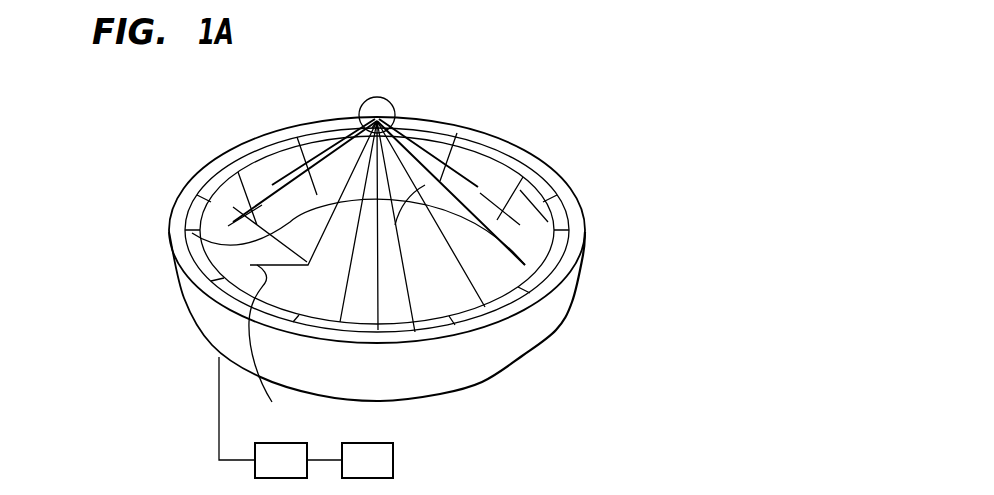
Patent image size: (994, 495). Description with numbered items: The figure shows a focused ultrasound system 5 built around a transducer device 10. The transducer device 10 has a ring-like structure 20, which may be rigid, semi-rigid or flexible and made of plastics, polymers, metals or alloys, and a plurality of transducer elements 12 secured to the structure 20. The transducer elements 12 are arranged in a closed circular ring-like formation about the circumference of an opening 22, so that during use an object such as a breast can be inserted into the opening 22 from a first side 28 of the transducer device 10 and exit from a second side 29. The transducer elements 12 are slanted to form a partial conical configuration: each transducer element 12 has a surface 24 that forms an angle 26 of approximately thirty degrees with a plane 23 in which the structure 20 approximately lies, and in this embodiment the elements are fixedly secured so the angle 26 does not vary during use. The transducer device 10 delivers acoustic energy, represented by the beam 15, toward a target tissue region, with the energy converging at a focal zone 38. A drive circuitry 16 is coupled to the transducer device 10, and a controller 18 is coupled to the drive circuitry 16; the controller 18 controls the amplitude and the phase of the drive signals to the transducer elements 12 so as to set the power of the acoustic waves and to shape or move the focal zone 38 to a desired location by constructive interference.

The focused ultrasound system 5 is at (508, 100).
The transducer device 10 is at (581, 269).
The transducer elements 12 is at (542, 208).
The beam 15 is at (443, 183).
The drive circuitry 16 is at (300, 474).
The controller 18 is at (386, 474).
The structure 20 is at (517, 353).
The opening 22 is at (488, 278).
The plane 23 is at (269, 349).
The surface 24 is at (226, 203).
The angle 26 is at (250, 265).
The first side 28 is at (170, 224).
The second side 29 is at (198, 333).
The focal zone 38 is at (383, 97).